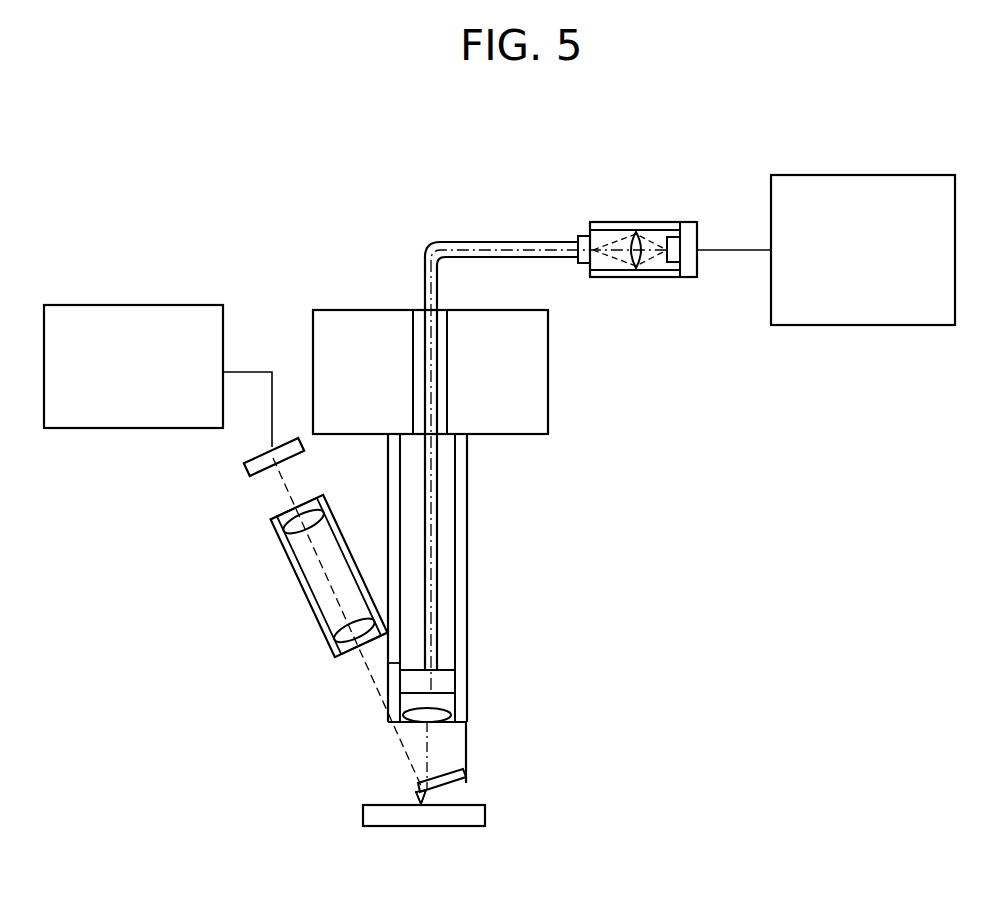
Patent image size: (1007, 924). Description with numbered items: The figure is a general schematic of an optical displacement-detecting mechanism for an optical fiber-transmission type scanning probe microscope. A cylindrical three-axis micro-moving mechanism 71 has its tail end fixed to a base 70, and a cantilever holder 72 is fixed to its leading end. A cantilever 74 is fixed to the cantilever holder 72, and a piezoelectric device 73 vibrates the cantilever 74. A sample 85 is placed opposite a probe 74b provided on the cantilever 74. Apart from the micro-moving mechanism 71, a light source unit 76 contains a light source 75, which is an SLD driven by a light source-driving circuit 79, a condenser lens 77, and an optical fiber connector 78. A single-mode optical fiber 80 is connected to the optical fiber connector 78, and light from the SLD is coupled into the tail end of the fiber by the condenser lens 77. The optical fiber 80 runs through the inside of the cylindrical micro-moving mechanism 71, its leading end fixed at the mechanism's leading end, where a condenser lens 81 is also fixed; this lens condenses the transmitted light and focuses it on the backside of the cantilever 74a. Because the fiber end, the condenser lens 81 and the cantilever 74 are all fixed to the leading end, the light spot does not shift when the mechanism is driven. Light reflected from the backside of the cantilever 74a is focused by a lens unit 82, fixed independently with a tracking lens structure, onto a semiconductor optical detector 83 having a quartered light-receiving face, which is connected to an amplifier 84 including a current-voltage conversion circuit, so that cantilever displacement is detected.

The base 70 is at (537, 405).
The three-axis micro-moving mechanism 71 is at (468, 578).
The cantilever holder 72 is at (458, 749).
The piezoelectric device 73 is at (468, 780).
The cantilever 74 is at (447, 795).
The backside of the cantilever 74a is at (418, 787).
The probe 74b is at (414, 806).
The light source 75 is at (690, 236).
The light source unit 76 is at (657, 222).
The condenser lens 77 is at (629, 262).
The optical fiber connector 78 is at (584, 232).
The light source-driving circuit 79 is at (917, 326).
The optical fiber 80 is at (439, 514).
The condenser lens 81 is at (452, 713).
The lens unit 82 is at (313, 615).
The semiconductor optical detector 83 is at (251, 474).
The amplifier 84 is at (88, 429).
The sample 85 is at (465, 827).